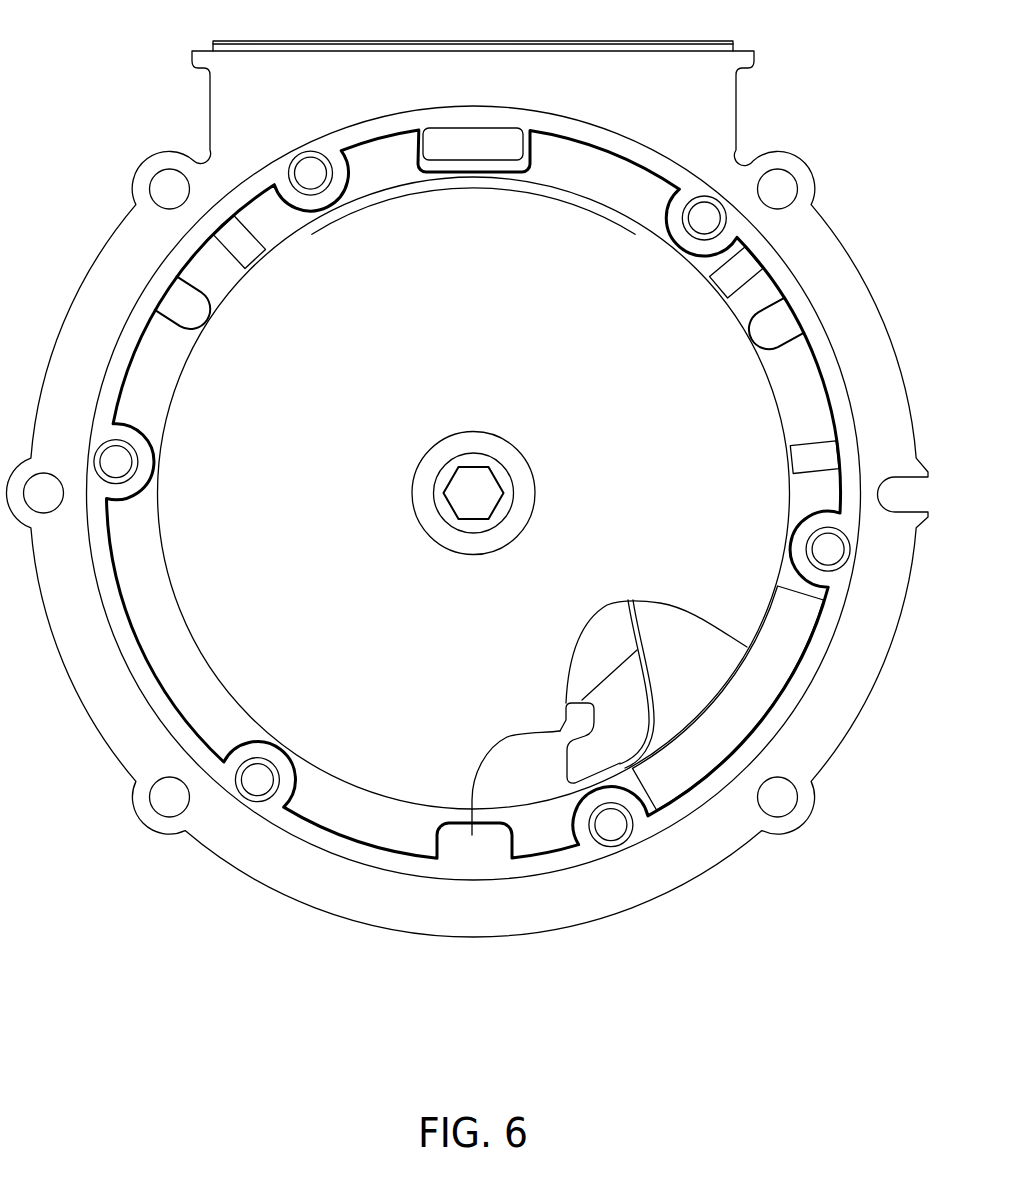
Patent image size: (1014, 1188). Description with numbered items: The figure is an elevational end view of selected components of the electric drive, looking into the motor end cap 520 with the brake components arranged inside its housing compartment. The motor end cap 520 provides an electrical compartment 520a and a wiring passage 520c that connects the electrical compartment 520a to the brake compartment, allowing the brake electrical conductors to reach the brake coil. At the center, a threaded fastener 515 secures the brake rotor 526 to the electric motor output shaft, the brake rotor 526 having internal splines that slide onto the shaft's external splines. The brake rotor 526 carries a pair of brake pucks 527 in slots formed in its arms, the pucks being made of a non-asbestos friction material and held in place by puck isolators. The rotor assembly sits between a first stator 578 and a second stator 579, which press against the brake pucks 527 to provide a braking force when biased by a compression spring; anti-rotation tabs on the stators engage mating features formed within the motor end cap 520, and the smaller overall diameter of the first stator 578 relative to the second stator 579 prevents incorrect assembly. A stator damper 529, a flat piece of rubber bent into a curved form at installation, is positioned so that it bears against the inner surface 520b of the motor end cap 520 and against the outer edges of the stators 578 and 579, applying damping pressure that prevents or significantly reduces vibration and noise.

The motor end cap 520 is at (710, 838).
The electrical compartment 520a is at (297, 118).
The inner surface 520b is at (760, 722).
The wiring passage 520c is at (473, 155).
The threaded fastener 515 is at (482, 488).
The brake rotor 526 is at (600, 640).
The brake pucks 527 is at (512, 767).
The stator damper 529 is at (763, 678).
The first stator 578 is at (703, 658).
The second stator 579 is at (678, 500).